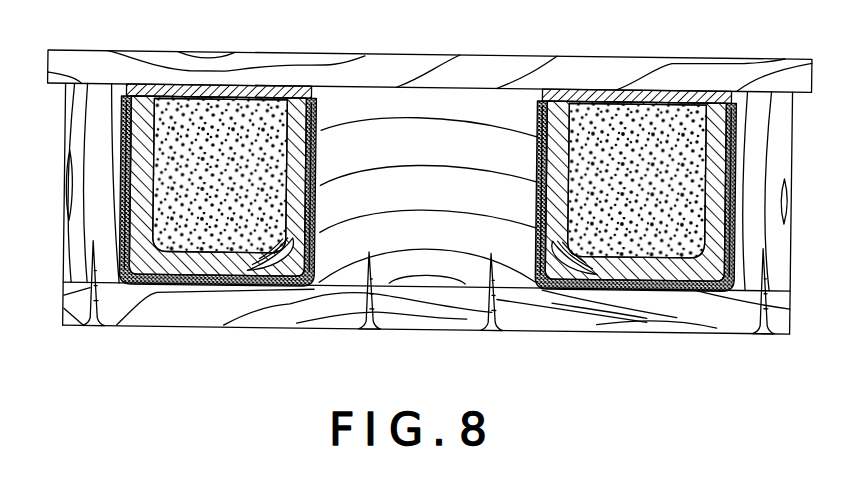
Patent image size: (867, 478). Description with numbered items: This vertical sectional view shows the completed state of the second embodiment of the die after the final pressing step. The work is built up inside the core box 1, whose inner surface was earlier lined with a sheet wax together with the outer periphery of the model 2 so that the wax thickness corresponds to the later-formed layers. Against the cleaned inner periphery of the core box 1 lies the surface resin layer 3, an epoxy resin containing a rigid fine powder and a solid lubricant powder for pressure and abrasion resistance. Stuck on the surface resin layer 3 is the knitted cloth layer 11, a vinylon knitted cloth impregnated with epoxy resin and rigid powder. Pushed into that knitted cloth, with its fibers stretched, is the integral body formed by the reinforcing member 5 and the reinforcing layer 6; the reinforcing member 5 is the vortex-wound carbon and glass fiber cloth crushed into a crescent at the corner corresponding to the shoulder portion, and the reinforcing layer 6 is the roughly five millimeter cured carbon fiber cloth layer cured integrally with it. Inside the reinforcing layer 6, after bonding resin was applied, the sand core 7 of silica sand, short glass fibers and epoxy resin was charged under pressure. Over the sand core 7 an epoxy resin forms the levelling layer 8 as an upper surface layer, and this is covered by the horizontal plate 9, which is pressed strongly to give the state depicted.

The core box 1 is at (770, 92).
The model 2 is at (483, 95).
The surface resin layer 3 is at (728, 283).
The reinforcing member 5 is at (592, 284).
The reinforcing layer 6 is at (645, 284).
The sand core 7 is at (685, 97).
The levelling layer 8 is at (640, 88).
The horizontal plate 9 is at (575, 64).
The knitted cloth layer 11 is at (690, 283).